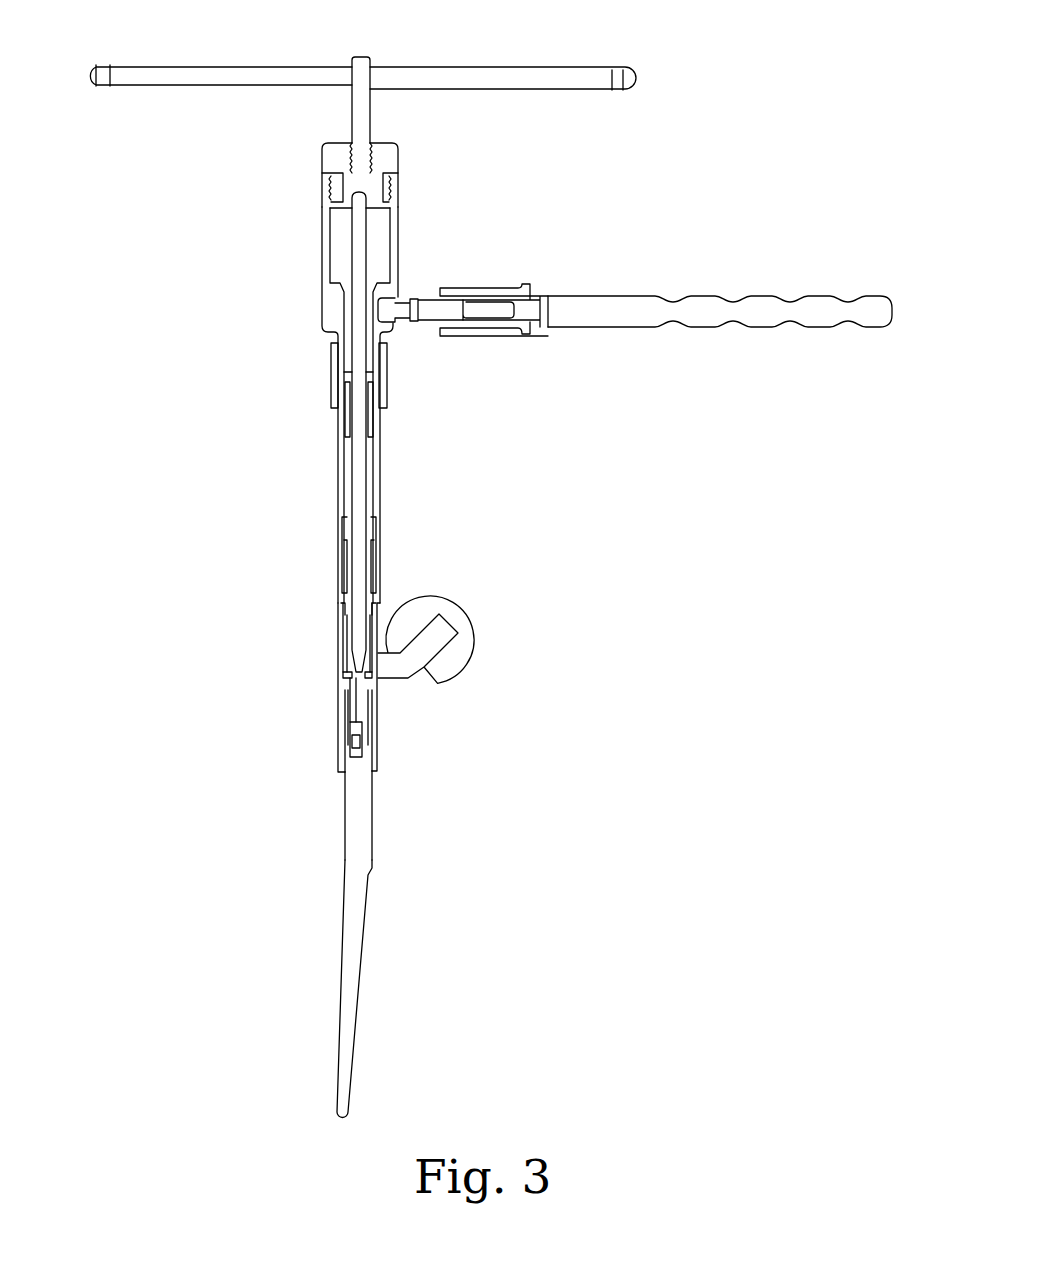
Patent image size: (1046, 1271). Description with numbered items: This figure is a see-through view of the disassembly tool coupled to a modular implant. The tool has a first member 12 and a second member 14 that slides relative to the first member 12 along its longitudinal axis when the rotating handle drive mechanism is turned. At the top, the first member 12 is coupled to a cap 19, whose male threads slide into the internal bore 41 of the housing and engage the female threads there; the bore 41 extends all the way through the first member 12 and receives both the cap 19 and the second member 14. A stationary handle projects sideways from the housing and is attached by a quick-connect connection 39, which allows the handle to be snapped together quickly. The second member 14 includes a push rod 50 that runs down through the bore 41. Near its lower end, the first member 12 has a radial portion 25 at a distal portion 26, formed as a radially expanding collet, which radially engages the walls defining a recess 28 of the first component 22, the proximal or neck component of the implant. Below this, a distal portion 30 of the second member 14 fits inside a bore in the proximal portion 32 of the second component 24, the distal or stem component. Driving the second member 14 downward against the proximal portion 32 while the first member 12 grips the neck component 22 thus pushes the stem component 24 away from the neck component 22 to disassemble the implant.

The cap 19 is at (400, 165).
The internal bore 41 is at (383, 248).
The quick-connect connection 39 is at (430, 292).
The push rod 50 is at (374, 601).
The first member 12 is at (343, 653).
The radial portion 25 is at (338, 660).
The recess 28 is at (346, 674).
The distal portion 26 is at (370, 676).
The first component 22 is at (413, 679).
The second member 14 is at (362, 722).
The distal portion 30 is at (355, 748).
The proximal portion 32 is at (362, 787).
The second component 24 is at (368, 873).